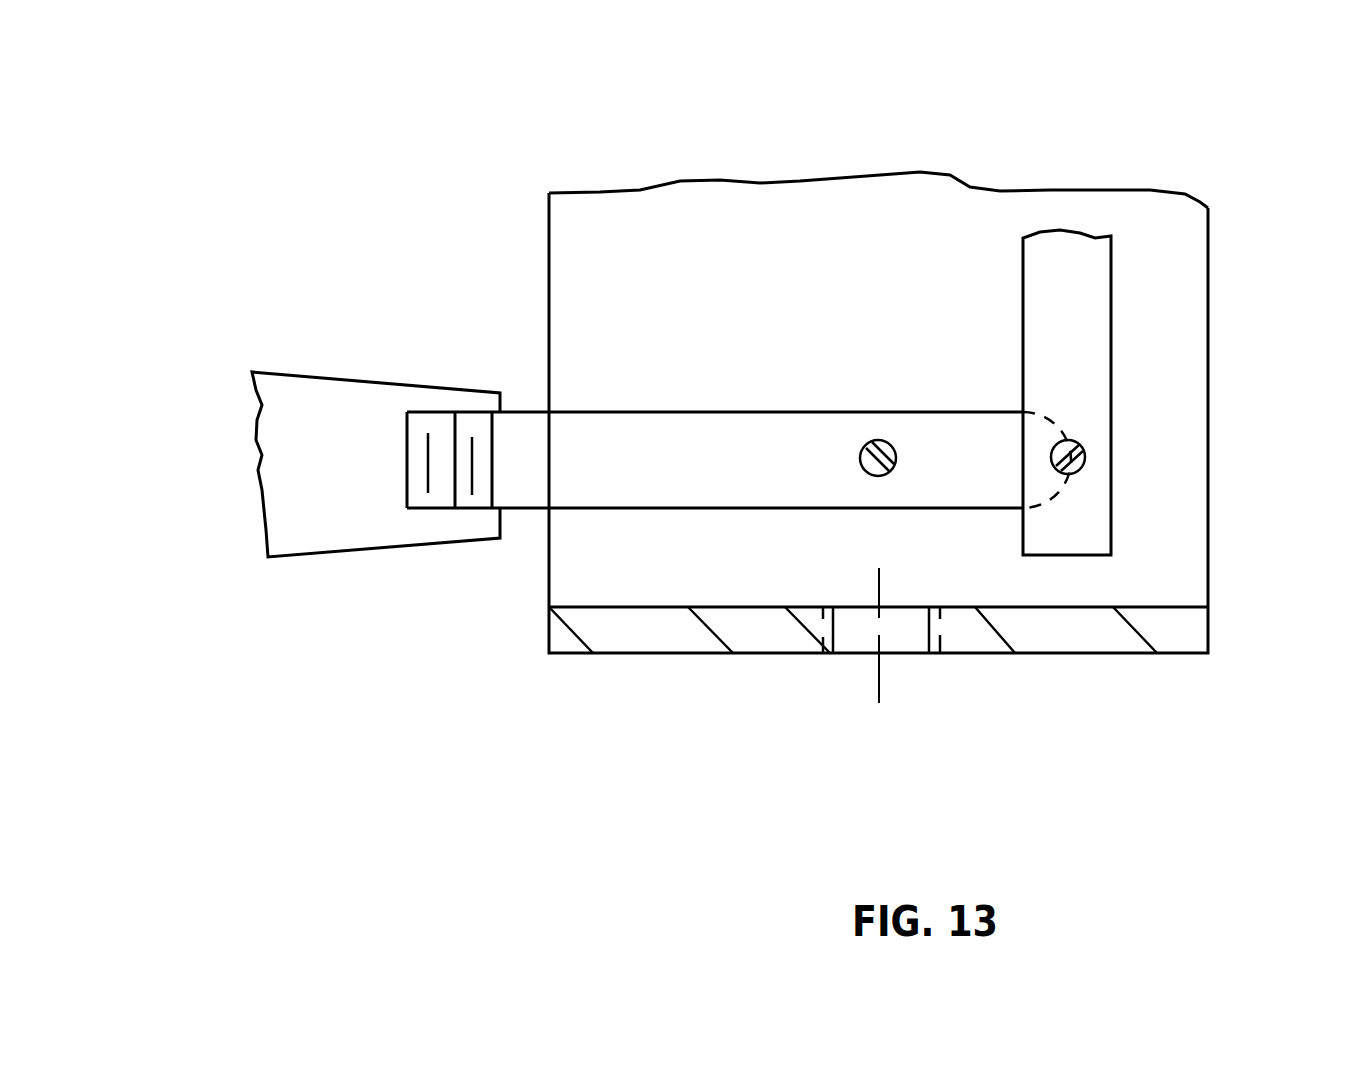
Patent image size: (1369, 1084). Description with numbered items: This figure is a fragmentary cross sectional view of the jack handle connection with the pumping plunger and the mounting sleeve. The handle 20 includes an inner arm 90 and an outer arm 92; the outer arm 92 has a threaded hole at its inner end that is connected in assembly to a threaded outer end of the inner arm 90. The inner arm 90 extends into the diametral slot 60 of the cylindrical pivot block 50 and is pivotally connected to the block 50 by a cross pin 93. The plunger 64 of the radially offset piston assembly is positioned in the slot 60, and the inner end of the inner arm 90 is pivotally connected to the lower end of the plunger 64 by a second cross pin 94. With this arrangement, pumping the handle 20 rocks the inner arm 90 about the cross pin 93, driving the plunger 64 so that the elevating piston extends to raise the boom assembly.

The handle 20 is at (285, 366).
The pivot block 50 is at (1208, 553).
The diametral slot 60 is at (658, 209).
The plunger 64 is at (1072, 285).
The inner arm 90 is at (963, 490).
The outer arm 92 is at (360, 538).
The cross pin 93 is at (880, 441).
The cross pin 94 is at (1085, 457).